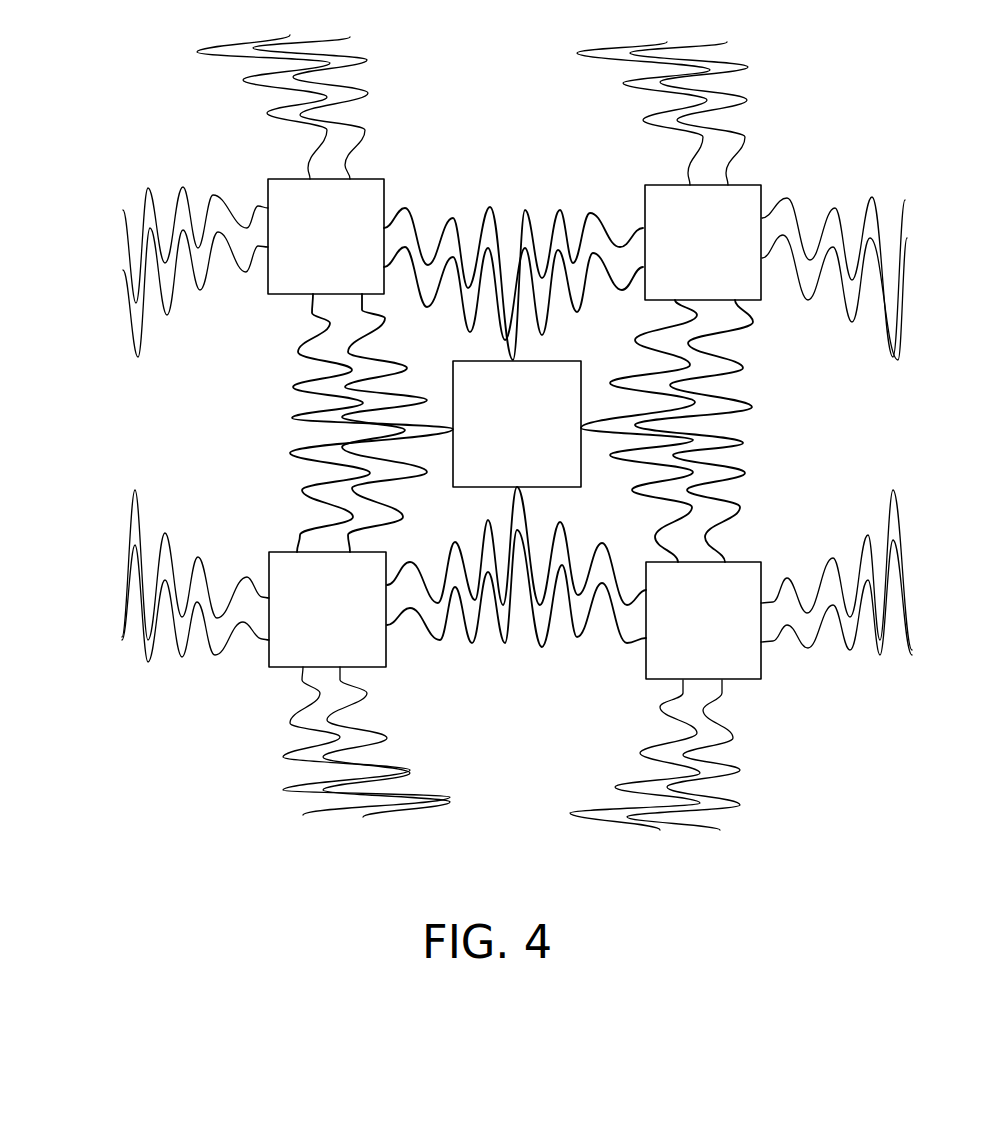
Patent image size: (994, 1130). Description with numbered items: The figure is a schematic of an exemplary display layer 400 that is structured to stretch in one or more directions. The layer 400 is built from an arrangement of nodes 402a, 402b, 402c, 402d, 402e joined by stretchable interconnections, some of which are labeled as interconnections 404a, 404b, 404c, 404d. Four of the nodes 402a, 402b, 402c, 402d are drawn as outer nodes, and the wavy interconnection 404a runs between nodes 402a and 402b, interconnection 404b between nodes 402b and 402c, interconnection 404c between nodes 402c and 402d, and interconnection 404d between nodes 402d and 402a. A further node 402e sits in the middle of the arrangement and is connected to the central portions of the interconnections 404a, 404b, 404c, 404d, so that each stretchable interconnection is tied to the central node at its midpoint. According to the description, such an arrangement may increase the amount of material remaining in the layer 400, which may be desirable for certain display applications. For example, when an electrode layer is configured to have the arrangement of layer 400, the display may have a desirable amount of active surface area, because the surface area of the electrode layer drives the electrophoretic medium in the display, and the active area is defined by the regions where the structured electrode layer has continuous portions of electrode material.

The layer 400 is at (135, 118).
The node 402a is at (280, 205).
The node 402b is at (743, 195).
The node 402c is at (748, 578).
The node 402d is at (283, 578).
The node 402e is at (477, 368).
The stretchable interconnection 404a is at (527, 223).
The stretchable interconnection 404b is at (737, 423).
The stretchable interconnection 404c is at (513, 637).
The stretchable interconnection 404d is at (275, 372).